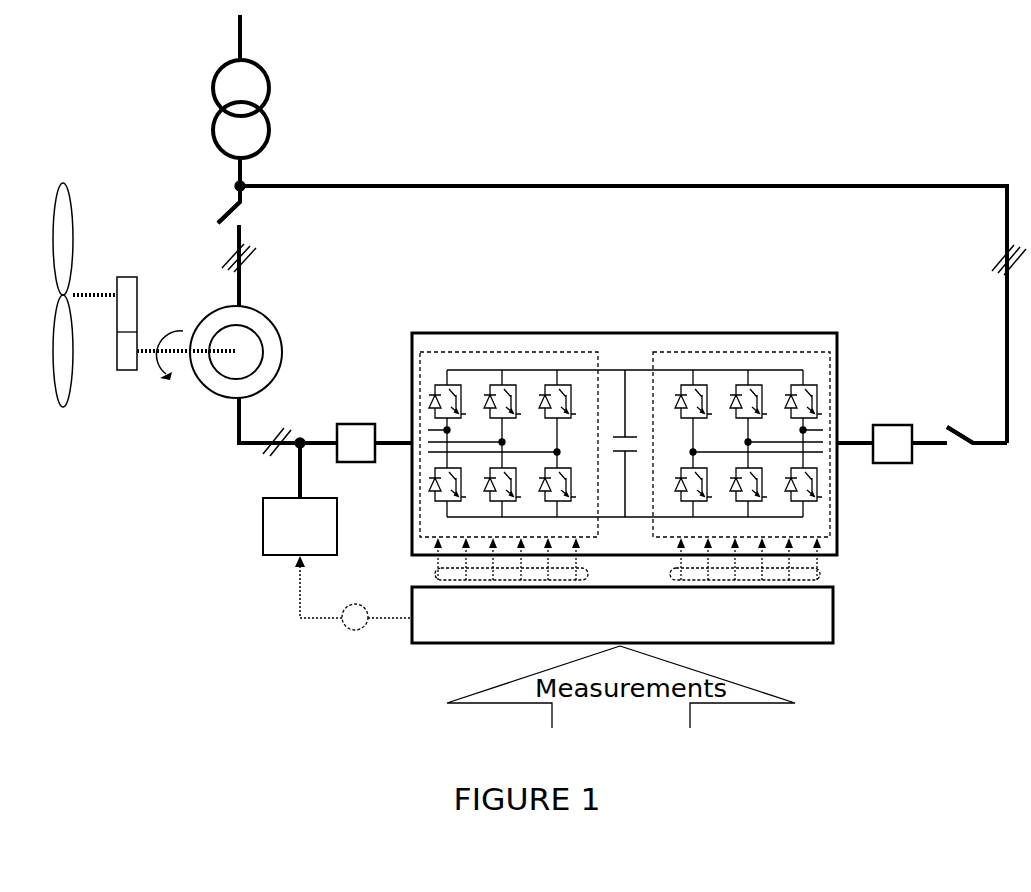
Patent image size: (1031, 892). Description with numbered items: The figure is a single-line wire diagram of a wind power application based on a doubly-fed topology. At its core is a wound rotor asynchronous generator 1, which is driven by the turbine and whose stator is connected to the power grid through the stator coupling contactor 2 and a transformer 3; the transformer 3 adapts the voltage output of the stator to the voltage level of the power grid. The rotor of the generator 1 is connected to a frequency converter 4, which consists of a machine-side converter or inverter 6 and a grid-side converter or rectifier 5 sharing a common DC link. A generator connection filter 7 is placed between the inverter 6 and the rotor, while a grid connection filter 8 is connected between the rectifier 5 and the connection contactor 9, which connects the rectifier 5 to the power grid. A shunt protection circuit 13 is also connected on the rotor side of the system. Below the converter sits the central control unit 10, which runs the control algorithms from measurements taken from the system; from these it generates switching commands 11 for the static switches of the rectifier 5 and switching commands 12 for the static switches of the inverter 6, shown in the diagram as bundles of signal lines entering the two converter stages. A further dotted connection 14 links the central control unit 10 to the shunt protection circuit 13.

The wound rotor asynchronous generator 1 is at (283, 340).
The stator coupling contactor 2 is at (222, 218).
The transformer 3 is at (218, 71).
The frequency converter 4 is at (622, 333).
The rectifier 5 is at (745, 352).
The inverter 6 is at (510, 352).
The generator connection filter 7 is at (357, 424).
The grid connection filter 8 is at (895, 425).
The connection contactor 9 is at (968, 427).
The central control unit 10 is at (835, 621).
The switching commands 11 is at (820, 578).
The switching commands 12 is at (435, 575).
The shunt protection circuit 13 is at (262, 531).
The control connection 14 is at (350, 628).